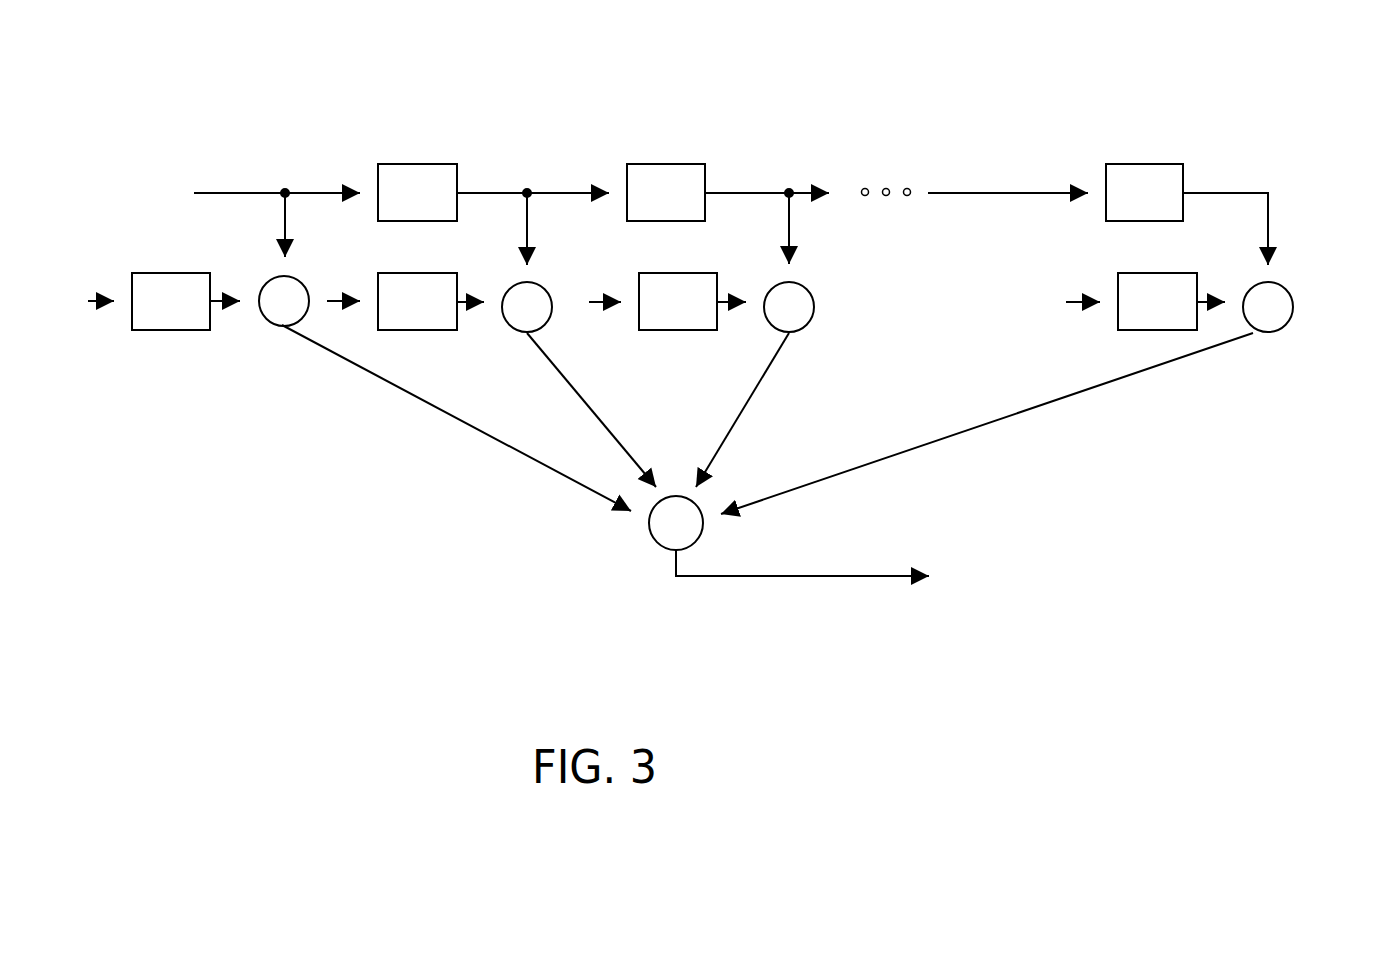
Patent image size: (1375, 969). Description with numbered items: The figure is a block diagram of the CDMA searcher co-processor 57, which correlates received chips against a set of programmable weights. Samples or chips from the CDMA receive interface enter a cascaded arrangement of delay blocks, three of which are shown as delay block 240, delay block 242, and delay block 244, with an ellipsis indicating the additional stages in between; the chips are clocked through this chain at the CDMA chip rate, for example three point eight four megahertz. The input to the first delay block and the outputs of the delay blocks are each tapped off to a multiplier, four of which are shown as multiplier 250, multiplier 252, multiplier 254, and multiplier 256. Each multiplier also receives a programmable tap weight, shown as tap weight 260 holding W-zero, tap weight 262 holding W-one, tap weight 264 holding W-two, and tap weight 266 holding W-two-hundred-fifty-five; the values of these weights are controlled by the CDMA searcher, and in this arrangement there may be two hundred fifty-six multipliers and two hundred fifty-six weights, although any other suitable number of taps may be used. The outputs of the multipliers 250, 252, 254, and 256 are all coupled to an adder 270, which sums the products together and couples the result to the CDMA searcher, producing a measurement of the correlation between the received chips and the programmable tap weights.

The CDMA searcher co-processor 57 is at (556, 72).
The delay block 240 is at (440, 164).
The delay block 242 is at (680, 164).
The delay block 244 is at (1177, 152).
The multiplier 250 is at (308, 290).
The multiplier 252 is at (549, 292).
The multiplier 254 is at (827, 290).
The multiplier 256 is at (1294, 300).
The programmable tap weight 260 is at (185, 330).
The programmable tap weight 262 is at (440, 330).
The programmable tap weight 264 is at (707, 260).
The programmable tap weight 266 is at (1177, 273).
The adder 270 is at (655, 545).